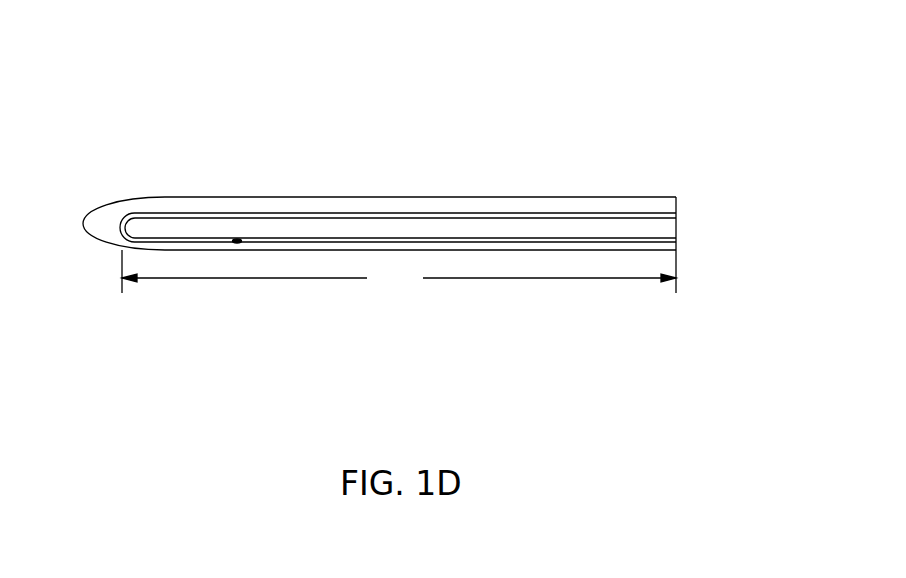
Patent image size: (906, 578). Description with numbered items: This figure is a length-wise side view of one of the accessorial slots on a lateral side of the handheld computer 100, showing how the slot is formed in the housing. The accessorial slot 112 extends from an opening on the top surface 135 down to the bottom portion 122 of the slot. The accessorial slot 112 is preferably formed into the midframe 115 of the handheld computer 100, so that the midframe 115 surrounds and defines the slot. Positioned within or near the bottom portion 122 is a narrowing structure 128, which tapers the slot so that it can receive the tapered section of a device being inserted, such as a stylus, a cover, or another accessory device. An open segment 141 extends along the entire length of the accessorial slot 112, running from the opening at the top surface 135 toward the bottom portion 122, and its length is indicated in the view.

The handheld computer 100 is at (680, 150).
The accessorial slot 112 is at (241, 242).
The midframe 115 is at (383, 203).
The bottom portion 122 is at (157, 197).
The narrowing structure 128 is at (150, 226).
The top surface 135 is at (676, 247).
The open segment 141 is at (399, 271).